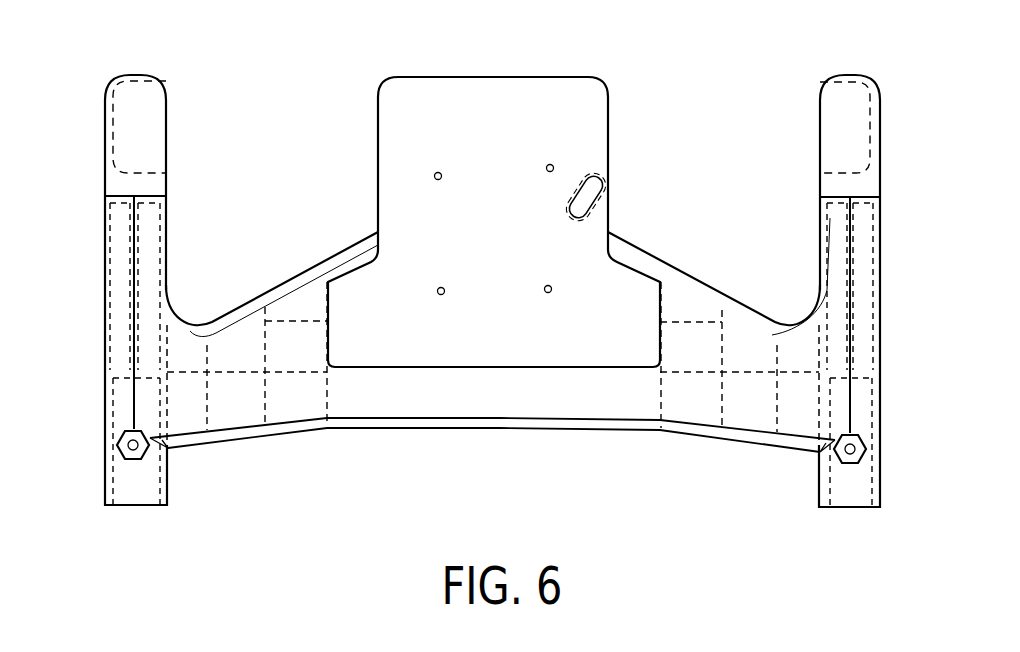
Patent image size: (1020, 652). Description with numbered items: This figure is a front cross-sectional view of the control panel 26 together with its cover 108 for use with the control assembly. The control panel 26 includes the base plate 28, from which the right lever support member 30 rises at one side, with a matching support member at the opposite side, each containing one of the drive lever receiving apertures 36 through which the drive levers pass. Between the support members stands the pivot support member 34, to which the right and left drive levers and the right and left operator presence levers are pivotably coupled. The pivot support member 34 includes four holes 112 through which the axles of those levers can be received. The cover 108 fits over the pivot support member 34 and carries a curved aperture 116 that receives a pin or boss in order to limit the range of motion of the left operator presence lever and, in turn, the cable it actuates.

The control panel 26 is at (604, 400).
The base plate 28 is at (383, 402).
The right lever support member 30 is at (108, 114).
The pivot support member 34 is at (482, 90).
The drive lever receiving apertures 36 is at (148, 114).
The cover 108 is at (393, 113).
The holes 112 is at (436, 172).
The curved aperture 116 is at (606, 186).